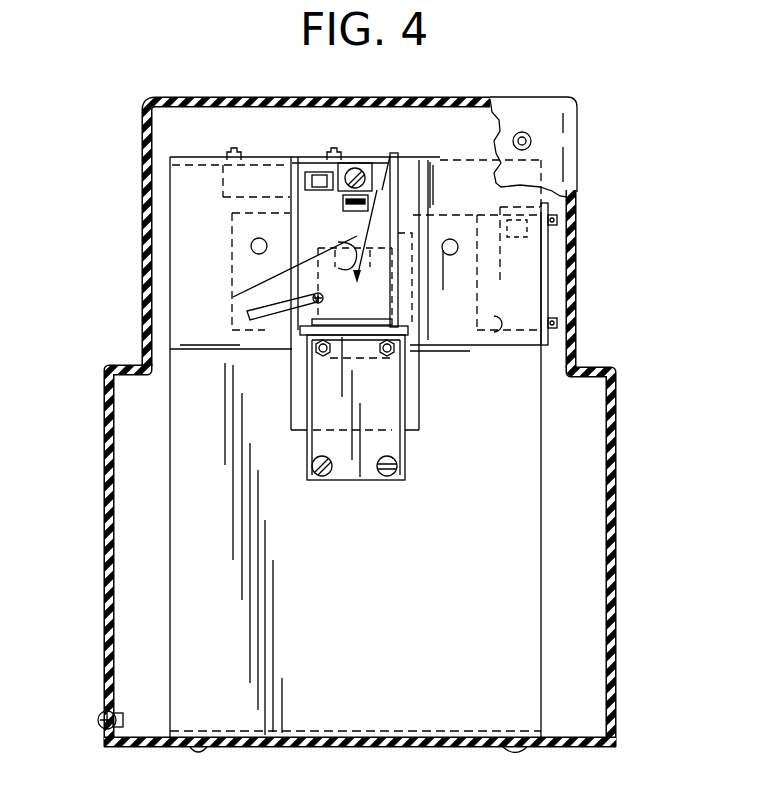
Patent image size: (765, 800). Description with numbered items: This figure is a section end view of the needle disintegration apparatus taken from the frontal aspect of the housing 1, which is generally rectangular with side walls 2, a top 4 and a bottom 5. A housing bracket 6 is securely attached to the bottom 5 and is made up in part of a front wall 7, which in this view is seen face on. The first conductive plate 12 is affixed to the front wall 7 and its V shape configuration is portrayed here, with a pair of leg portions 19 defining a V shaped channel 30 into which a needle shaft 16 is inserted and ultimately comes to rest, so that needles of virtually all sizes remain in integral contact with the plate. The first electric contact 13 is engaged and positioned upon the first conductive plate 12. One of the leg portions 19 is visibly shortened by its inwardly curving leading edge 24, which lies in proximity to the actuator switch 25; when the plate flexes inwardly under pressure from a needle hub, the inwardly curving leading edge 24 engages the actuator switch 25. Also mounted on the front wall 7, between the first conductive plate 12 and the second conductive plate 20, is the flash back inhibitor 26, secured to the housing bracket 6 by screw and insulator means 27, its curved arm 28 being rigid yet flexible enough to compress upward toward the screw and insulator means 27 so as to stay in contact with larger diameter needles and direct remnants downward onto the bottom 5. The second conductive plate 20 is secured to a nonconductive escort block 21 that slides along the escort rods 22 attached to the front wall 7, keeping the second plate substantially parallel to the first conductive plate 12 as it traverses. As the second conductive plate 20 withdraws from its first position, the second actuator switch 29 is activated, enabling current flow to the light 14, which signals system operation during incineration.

The housing 1 is at (188, 88).
The side walls 2 is at (104, 487).
The top 4 is at (490, 96).
The bottom 5 is at (392, 748).
The housing bracket 6 is at (552, 580).
The front wall 7 is at (512, 532).
The first conductive plate 12 is at (400, 287).
The first electric contact 13 is at (305, 303).
The light 14 is at (531, 141).
The needle shaft 16 is at (357, 283).
The leg portions 19 is at (300, 203).
The second conductive plate 20 is at (415, 330).
The escort block 21 is at (233, 245).
The escort rods 22 is at (252, 250).
The inwardly curving leading edge 24 is at (313, 170).
The actuator switch 25 is at (357, 278).
The flash back inhibitor 26 is at (345, 235).
The screw and insulator means 27 is at (351, 162).
The curved arm 28 is at (397, 152).
The second actuator switch 29 is at (528, 297).
The V shaped channel 30 is at (244, 312).